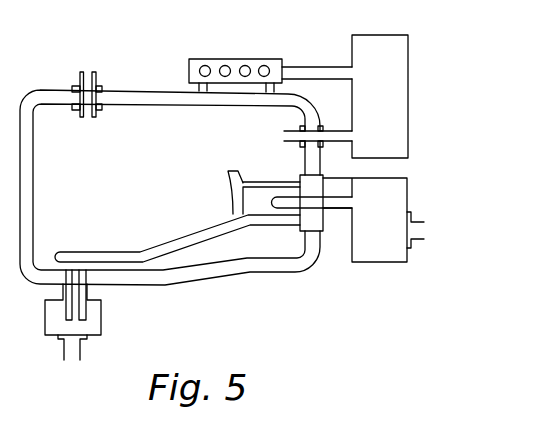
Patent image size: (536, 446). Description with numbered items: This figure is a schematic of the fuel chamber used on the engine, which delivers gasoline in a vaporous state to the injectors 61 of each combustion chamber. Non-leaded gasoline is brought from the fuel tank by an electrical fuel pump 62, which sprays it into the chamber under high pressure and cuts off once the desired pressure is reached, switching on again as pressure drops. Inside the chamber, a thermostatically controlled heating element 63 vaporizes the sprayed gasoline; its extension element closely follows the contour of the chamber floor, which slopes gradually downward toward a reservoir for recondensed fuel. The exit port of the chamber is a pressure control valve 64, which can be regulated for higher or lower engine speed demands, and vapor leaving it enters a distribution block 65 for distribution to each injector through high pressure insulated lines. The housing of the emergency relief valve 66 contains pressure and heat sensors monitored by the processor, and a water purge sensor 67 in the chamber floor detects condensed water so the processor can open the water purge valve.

The injectors 61 is at (283, 200).
The electrical fuel pump 62 is at (394, 237).
The heating element 63 is at (176, 244).
The pressure control valve 64 is at (392, 105).
The distribution block 65 is at (258, 62).
The emergency relief valve 66 is at (88, 78).
The water purge sensor 67 is at (52, 318).